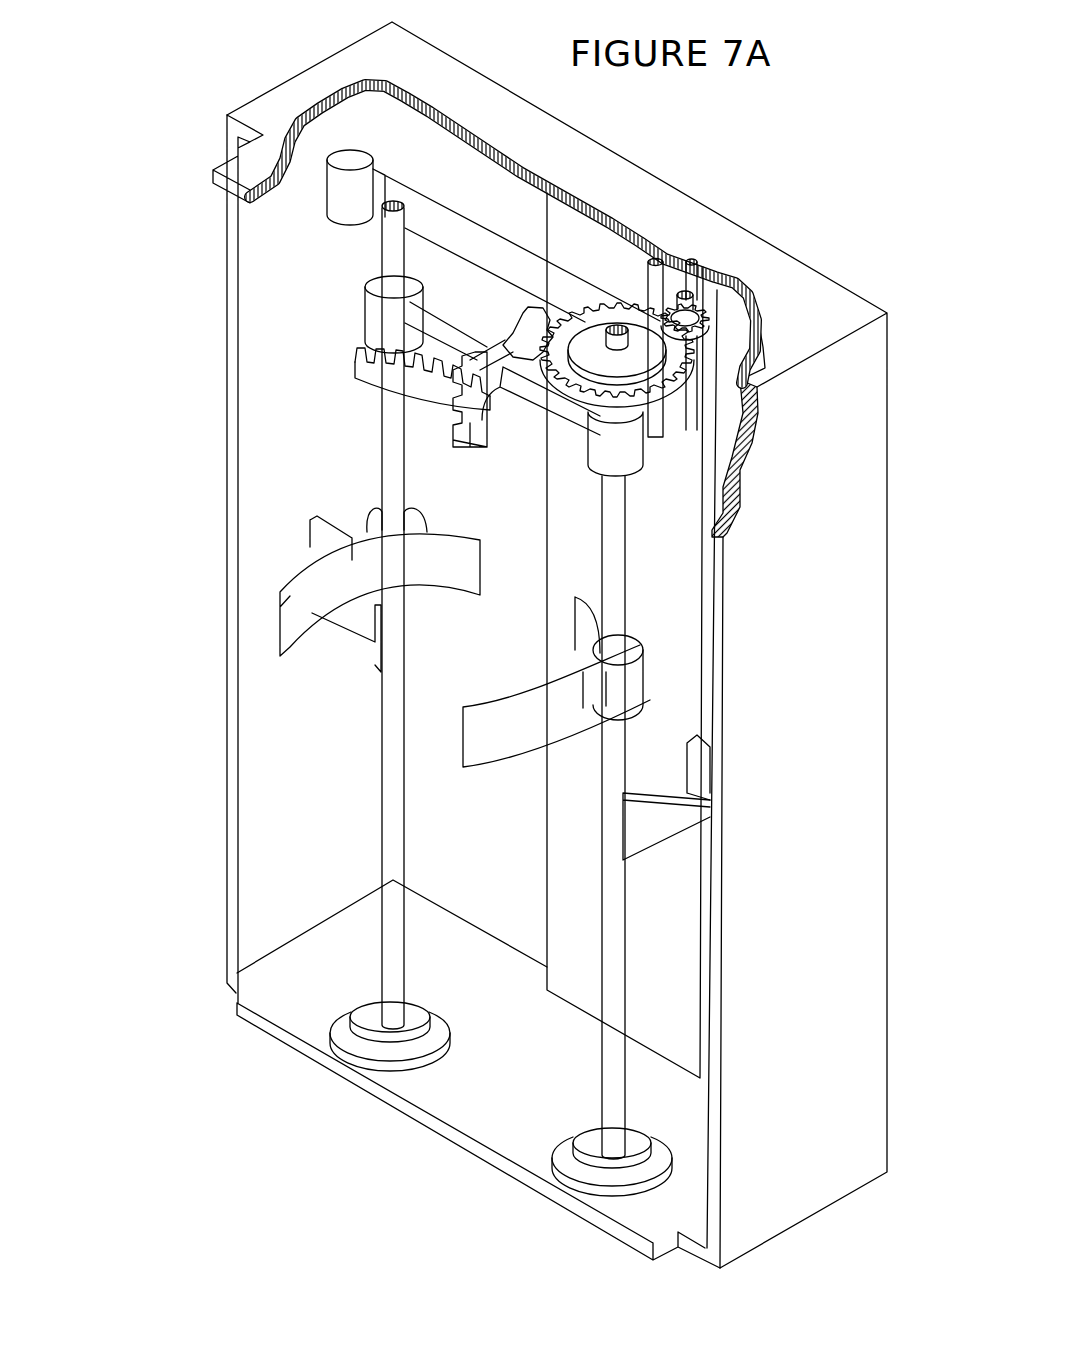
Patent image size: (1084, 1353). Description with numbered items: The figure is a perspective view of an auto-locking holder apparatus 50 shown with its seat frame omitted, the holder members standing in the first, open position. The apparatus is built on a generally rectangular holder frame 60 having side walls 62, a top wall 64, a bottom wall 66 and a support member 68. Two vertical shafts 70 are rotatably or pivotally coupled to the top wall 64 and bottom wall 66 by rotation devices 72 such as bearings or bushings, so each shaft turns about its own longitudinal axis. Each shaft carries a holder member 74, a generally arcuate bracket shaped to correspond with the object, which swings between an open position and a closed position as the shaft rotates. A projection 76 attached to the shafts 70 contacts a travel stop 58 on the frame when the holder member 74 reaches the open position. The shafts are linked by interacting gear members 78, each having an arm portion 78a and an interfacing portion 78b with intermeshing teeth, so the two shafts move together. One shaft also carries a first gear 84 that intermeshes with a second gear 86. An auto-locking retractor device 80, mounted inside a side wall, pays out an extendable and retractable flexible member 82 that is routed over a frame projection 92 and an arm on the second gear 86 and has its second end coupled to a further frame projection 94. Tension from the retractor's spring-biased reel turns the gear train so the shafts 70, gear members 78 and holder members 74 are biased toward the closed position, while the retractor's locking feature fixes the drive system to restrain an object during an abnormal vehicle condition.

The auto-locking holder apparatus 50 is at (155, 473).
The travel stop 58 is at (317, 542).
The holder frame 60 is at (837, 306).
The side walls 62 is at (258, 237).
The top wall 64 is at (647, 183).
The bottom wall 66 is at (308, 998).
The support member 68 is at (553, 820).
The shafts 70 is at (381, 804).
The rotation devices 72 is at (367, 1020).
The holder member 74 is at (453, 560).
The projection 76 is at (377, 643).
The gear members 78 is at (340, 367).
The arm portion 78a is at (428, 320).
The interfacing portion 78b is at (374, 375).
The auto-locking retractor device 80 is at (337, 210).
The flexible member 82 is at (460, 227).
The first gear 84 is at (697, 333).
The second gear 86 is at (712, 313).
The projection 92 is at (689, 266).
The projection 94 is at (653, 278).